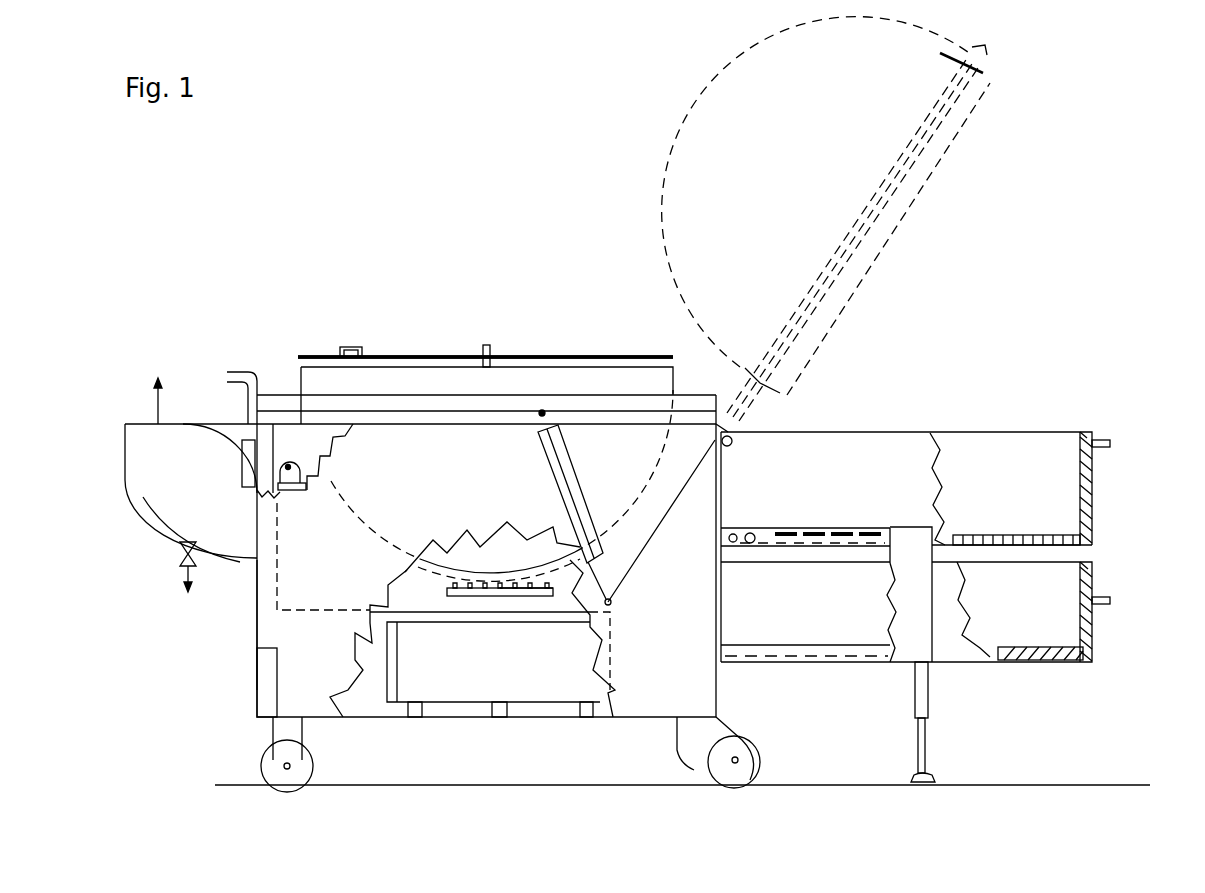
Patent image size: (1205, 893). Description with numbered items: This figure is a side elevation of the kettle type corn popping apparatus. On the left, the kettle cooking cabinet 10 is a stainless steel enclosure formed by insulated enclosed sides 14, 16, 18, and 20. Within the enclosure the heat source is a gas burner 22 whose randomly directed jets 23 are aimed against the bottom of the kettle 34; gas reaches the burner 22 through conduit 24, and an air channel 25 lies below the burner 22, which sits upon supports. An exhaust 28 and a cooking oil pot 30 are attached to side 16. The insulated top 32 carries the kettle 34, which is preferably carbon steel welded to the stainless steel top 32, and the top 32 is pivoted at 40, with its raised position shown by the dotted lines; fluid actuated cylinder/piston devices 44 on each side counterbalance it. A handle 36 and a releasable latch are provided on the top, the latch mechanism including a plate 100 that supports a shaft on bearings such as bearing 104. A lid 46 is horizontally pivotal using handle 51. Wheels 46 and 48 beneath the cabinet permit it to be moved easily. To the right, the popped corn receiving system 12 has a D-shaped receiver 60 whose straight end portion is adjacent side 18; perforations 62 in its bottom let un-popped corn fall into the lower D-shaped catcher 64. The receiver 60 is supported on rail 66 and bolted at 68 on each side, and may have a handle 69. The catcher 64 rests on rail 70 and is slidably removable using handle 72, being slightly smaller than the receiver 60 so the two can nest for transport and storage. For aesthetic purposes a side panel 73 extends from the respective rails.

The kettle cooking cabinet 10 is at (407, 352).
The popped corn receiving system 12 is at (1016, 432).
The insulated enclosed side 14 is at (332, 670).
The insulated enclosed side 16 is at (257, 620).
The insulated enclosed side 18 is at (721, 497).
The insulated enclosed side 20 is at (482, 589).
The gas burner 22 is at (538, 597).
The jets 23 is at (506, 597).
The conduit 24 is at (432, 613).
The air channel 25 is at (515, 697).
The exhaust 28 is at (207, 508).
The cooking oil pot 30 is at (243, 467).
The insulated top 32 is at (313, 478).
The kettle 34 is at (523, 563).
The handle 36 is at (237, 372).
The pivot 40 is at (715, 423).
The fluid actuated cylinder/piston device 44 is at (596, 545).
The lid / wheel 46 is at (447, 357).
The wheel 48 is at (487, 345).
The handle 51 is at (352, 346).
The D-shaped receiver 60 is at (847, 467).
The perforations 62 is at (1013, 537).
The D-shaped catcher 64 is at (873, 598).
The rail 66 is at (848, 528).
The bolt 68 is at (743, 529).
The handle 69 is at (1102, 440).
The rail 70 is at (778, 657).
The handle 72 is at (1108, 604).
The side panel 73 is at (933, 610).
The plate 100 is at (296, 491).
The bearing 104 is at (289, 466).